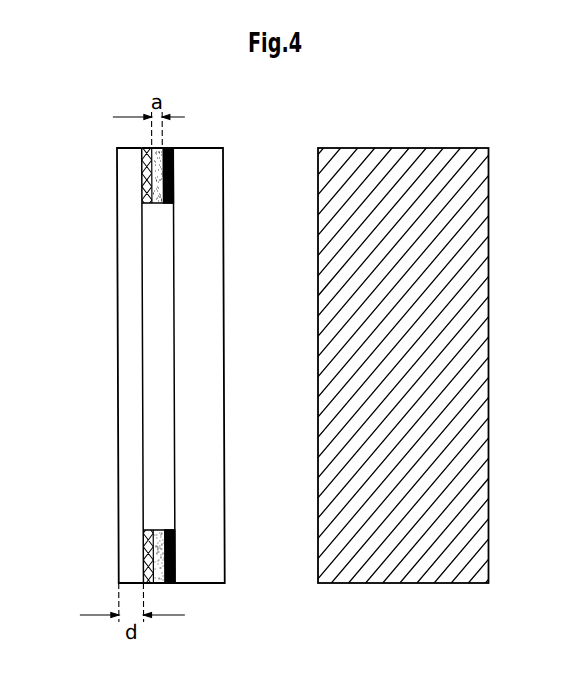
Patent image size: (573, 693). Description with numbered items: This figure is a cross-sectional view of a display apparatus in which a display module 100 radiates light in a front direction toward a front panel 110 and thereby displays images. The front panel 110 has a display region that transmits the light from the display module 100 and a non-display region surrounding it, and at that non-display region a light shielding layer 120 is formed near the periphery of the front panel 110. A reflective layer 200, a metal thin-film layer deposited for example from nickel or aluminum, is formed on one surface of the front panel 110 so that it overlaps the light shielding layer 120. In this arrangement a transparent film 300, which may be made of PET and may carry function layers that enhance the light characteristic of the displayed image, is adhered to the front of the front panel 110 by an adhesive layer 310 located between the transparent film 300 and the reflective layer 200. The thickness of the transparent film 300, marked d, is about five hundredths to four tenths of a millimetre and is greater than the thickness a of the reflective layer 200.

The display module 100 is at (405, 160).
The front panel 110 is at (203, 580).
The light shielding layer 120 is at (173, 170).
The reflective layer 200 is at (157, 191).
The transparent film 300 is at (128, 519).
The adhesive layer 310 is at (141, 160).